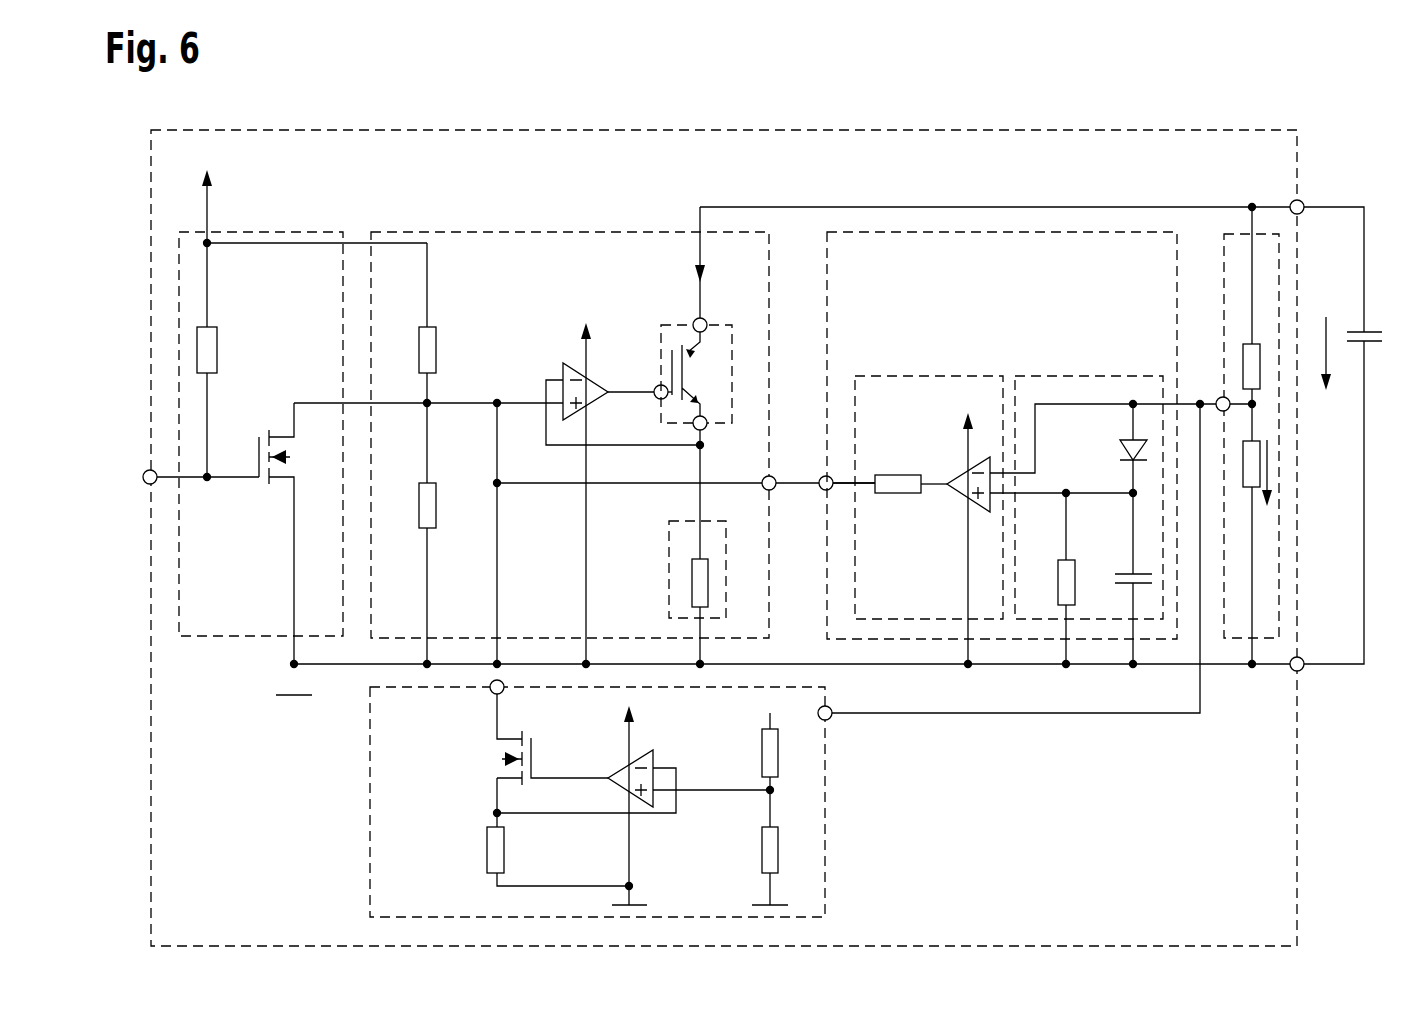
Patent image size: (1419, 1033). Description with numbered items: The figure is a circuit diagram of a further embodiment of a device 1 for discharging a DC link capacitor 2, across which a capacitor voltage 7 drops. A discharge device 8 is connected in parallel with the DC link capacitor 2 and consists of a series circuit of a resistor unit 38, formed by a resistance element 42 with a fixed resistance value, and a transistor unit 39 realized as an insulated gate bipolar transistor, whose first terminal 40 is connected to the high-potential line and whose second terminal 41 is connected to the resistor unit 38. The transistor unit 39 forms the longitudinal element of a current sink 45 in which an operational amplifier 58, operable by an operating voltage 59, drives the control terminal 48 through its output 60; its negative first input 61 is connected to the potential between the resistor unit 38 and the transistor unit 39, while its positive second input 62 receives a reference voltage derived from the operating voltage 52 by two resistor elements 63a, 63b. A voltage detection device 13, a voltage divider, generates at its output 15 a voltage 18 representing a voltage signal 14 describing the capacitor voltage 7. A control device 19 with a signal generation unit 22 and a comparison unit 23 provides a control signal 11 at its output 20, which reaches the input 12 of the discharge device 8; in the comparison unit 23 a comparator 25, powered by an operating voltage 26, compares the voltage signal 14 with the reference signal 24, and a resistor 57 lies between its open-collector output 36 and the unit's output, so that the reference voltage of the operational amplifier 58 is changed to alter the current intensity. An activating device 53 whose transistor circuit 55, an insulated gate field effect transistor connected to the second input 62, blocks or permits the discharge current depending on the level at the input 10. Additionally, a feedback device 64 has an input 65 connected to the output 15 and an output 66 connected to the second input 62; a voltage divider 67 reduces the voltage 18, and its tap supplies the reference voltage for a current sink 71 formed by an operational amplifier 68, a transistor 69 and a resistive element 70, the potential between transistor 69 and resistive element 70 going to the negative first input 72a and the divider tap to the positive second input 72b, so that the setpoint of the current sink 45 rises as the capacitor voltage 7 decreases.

The device 1 is at (1297, 150).
The DC link capacitor 2 is at (1364, 335).
The capacitor voltage 7 is at (1327, 358).
The discharge device 8 is at (574, 232).
The third input 10 is at (148, 486).
The control signal 11 is at (840, 482).
The input 12 is at (768, 491).
The voltage detection device 13 is at (1238, 233).
The voltage signal 14 is at (1200, 402).
The output 15 is at (1229, 408).
The voltage 18 is at (1270, 467).
The control device 19 is at (1110, 232).
The output 20 is at (825, 491).
The signal generation unit 22 is at (1104, 376).
The comparison unit 23 is at (945, 376).
The reference signal 24 is at (1016, 495).
The comparator 25 is at (991, 495).
The operating voltage 26 is at (970, 412).
The output 36 is at (947, 487).
The resistor unit 38 is at (669, 541).
The transistor unit 39 is at (660, 325).
The first terminal 40 is at (707, 322).
The second terminal 41 is at (707, 427).
The resistance element 42 is at (692, 570).
The current sink 45 is at (493, 322).
The control terminal 48 is at (656, 400).
The operating voltage 52 is at (207, 190).
The activating device 53 is at (313, 232).
The transistor circuit 55 is at (262, 322).
The resistor 57 is at (906, 476).
The operational amplifier 58 is at (596, 372).
The operating voltage 59 is at (584, 324).
The output 60 is at (606, 391).
The negative first input 61 is at (562, 380).
The positive second input 62 is at (562, 403).
The resistor element 63a is at (419, 345).
The resistor element 63b is at (419, 500).
The feedback device 64 is at (825, 833).
The input 65 is at (830, 719).
The output 66 is at (491, 691).
The voltage divider 67 is at (748, 822).
The operational amplifier 68 is at (621, 758).
The transistor 69 is at (496, 760).
The resistive element 70 is at (487, 845).
The current sink 71 is at (646, 842).
The negative first input 72a is at (656, 768).
The positive second input 72b is at (656, 792).